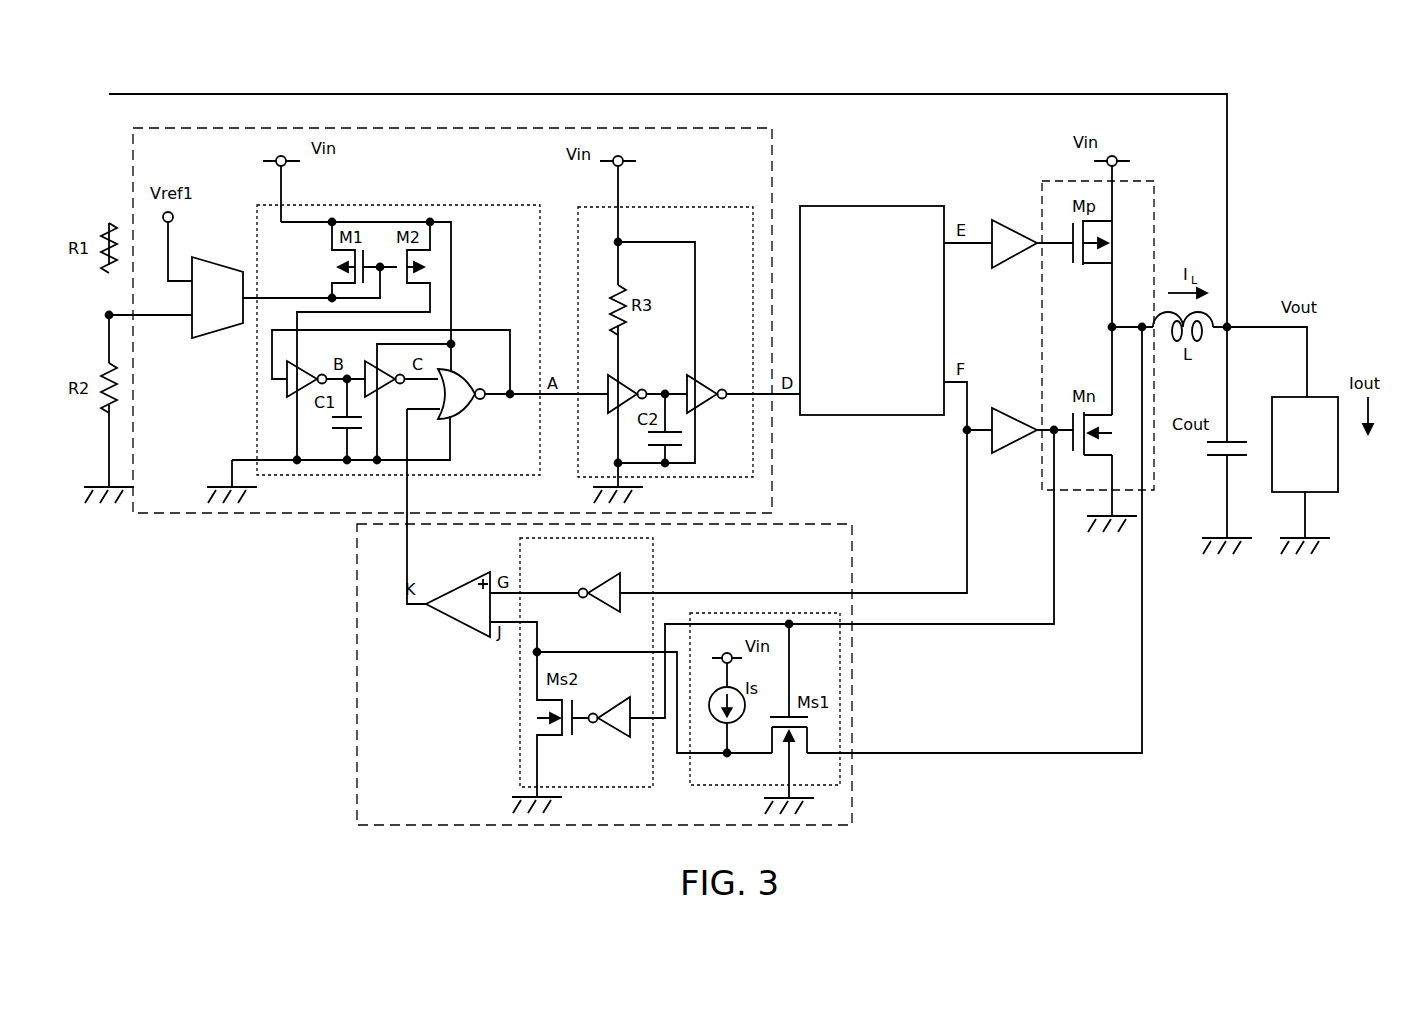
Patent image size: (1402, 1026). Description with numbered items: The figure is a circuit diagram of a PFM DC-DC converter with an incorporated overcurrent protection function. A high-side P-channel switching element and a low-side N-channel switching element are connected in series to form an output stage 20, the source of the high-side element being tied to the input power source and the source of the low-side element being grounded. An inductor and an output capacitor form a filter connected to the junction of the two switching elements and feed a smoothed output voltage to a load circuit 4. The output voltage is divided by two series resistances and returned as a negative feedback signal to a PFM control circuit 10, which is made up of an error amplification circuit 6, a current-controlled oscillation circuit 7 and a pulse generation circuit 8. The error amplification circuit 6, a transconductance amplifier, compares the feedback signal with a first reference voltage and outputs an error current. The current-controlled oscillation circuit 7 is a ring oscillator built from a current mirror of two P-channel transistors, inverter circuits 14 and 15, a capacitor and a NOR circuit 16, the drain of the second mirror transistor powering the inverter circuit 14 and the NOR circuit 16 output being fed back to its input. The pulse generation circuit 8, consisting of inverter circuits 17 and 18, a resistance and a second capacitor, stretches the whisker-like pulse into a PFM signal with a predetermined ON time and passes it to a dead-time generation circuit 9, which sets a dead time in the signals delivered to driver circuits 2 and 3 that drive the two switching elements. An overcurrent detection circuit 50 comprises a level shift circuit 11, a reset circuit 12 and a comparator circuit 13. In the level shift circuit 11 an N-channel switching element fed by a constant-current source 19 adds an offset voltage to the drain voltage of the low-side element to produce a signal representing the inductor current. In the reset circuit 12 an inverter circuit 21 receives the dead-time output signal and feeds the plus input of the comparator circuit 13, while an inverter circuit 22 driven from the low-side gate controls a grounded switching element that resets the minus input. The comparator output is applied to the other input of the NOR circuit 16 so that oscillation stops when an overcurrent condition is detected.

The driver circuit 2 is at (994, 220).
The driver circuit 3 is at (1006, 454).
The load circuit 4 is at (1338, 490).
The error amplification circuit 6 is at (205, 336).
The current-controlled oscillation circuit 7 is at (402, 205).
The pulse generation circuit 8 is at (675, 207).
The dead-time generation circuit 9 is at (870, 206).
The PFM control circuit 10 is at (232, 513).
The level shift circuit 11 is at (852, 676).
The reset circuit 12 is at (520, 728).
The comparator circuit 13 is at (472, 627).
The inverter circuit 14 is at (296, 399).
The inverter circuit 15 is at (393, 392).
The NOR circuit 16 is at (462, 412).
The inverter circuit 17 is at (606, 410).
The inverter circuit 18 is at (712, 406).
The constant-current source 19 is at (713, 712).
The output stage 20 is at (1152, 181).
The inverter circuit 21 is at (601, 582).
The inverter circuit 22 is at (621, 735).
The overcurrent detection circuit 50 is at (357, 676).